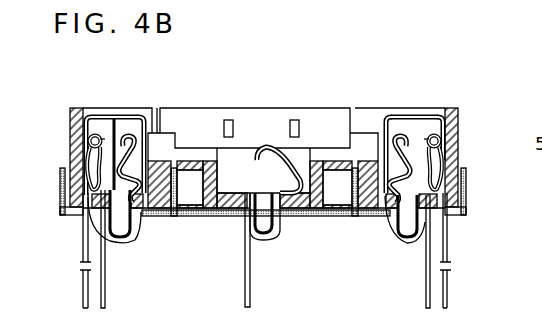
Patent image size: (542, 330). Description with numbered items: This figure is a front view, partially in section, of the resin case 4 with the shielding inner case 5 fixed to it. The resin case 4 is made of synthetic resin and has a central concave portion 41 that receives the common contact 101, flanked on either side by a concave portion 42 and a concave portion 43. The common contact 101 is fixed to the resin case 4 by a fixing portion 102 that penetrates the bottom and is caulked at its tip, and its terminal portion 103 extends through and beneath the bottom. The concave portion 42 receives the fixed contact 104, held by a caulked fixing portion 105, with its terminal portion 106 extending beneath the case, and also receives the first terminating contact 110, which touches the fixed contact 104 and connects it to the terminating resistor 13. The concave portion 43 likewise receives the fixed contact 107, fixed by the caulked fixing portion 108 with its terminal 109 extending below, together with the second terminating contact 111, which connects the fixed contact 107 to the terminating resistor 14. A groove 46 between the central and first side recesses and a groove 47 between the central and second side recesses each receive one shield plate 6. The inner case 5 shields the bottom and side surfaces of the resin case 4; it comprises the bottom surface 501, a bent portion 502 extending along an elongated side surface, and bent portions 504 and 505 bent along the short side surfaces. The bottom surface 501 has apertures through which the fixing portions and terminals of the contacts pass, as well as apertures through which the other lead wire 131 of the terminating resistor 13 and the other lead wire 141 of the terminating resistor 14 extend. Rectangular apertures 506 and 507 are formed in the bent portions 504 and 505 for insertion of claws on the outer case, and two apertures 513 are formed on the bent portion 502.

The resin case 4 is at (415, 95).
The inner case 5 is at (267, 212).
The shield plate 6 is at (174, 222).
The terminating resistor 13 is at (90, 163).
The terminating resistor 14 is at (439, 160).
The concave portion 41 is at (235, 155).
The concave portion 42 is at (121, 132).
The concave portion 43 is at (398, 121).
The groove 46 is at (187, 210).
The groove 47 is at (349, 213).
The common contact 101 is at (287, 158).
The fixing portion 102 is at (265, 240).
The terminal portion 103 is at (250, 296).
The fixed contact 104 is at (127, 155).
The fixing portion 105 is at (118, 238).
The terminal portion 106 is at (105, 300).
The fixed contact 107 is at (402, 138).
The fixing portion 108 is at (403, 239).
The terminal 109 is at (426, 296).
The first terminating contact 110 is at (107, 118).
The second terminating contact 111 is at (391, 116).
The lead wire 131 is at (82, 289).
The lead wire 141 is at (448, 297).
The bottom surface 501 is at (300, 216).
The bent portion 502 is at (243, 112).
The bent portion 504 is at (61, 200).
The bent portion 505 is at (467, 178).
The aperture 506 is at (60, 212).
The aperture 507 is at (467, 207).
The aperture 513 is at (228, 118).